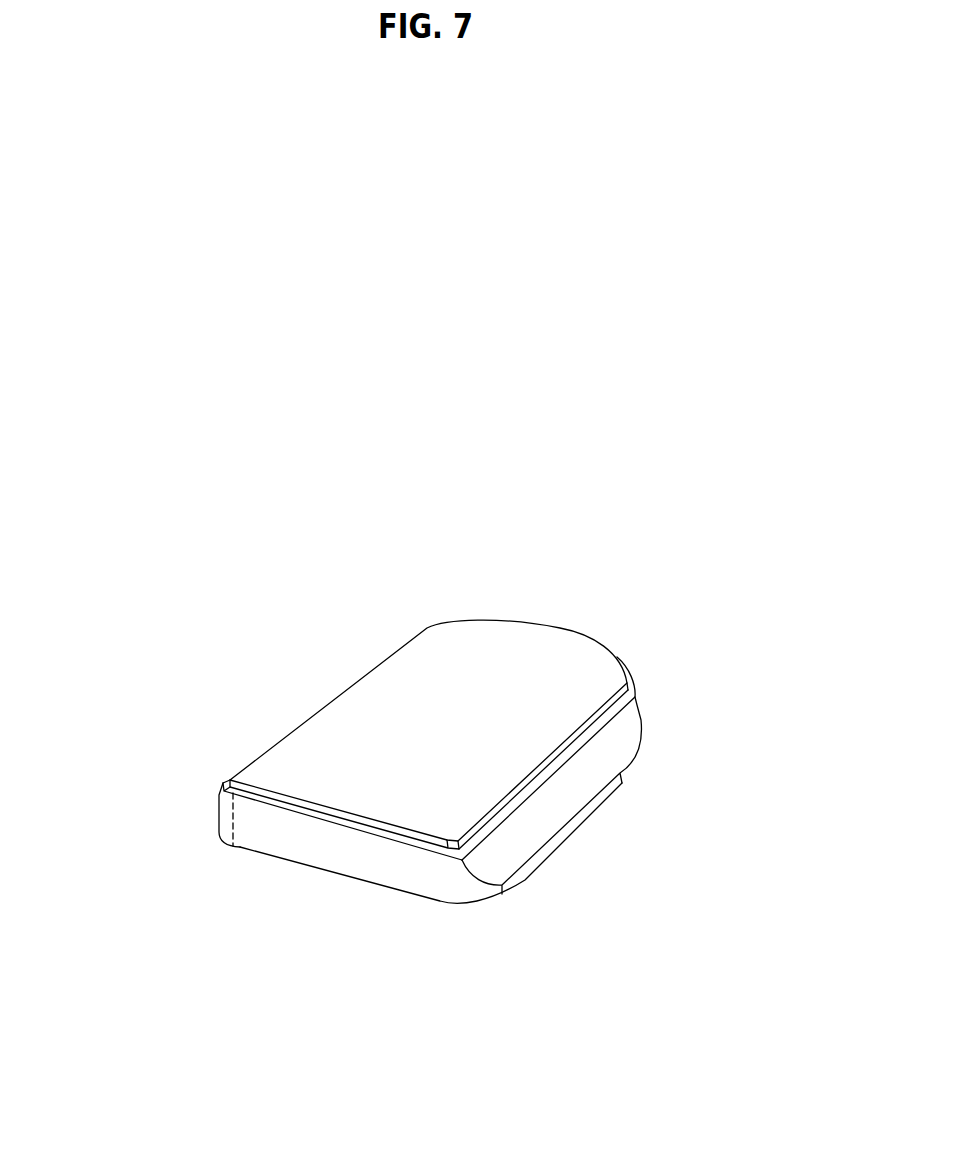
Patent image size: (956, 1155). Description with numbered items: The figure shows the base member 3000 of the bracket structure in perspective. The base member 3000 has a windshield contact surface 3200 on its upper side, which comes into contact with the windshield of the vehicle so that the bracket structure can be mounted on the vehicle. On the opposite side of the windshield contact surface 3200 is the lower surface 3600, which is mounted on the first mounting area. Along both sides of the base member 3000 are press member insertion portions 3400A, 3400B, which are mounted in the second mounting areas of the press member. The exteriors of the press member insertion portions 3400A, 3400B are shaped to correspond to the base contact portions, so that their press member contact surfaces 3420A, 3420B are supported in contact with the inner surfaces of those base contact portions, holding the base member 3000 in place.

The base member 3000 is at (457, 340).
The windshield contact surface 3200 is at (518, 655).
The press member insertion portion 3400A is at (637, 718).
The press member insertion portion 3400B is at (318, 708).
The press member contact surface 3420A is at (548, 807).
The press member contact surface 3420B is at (227, 781).
The lower surface 3600 is at (342, 875).